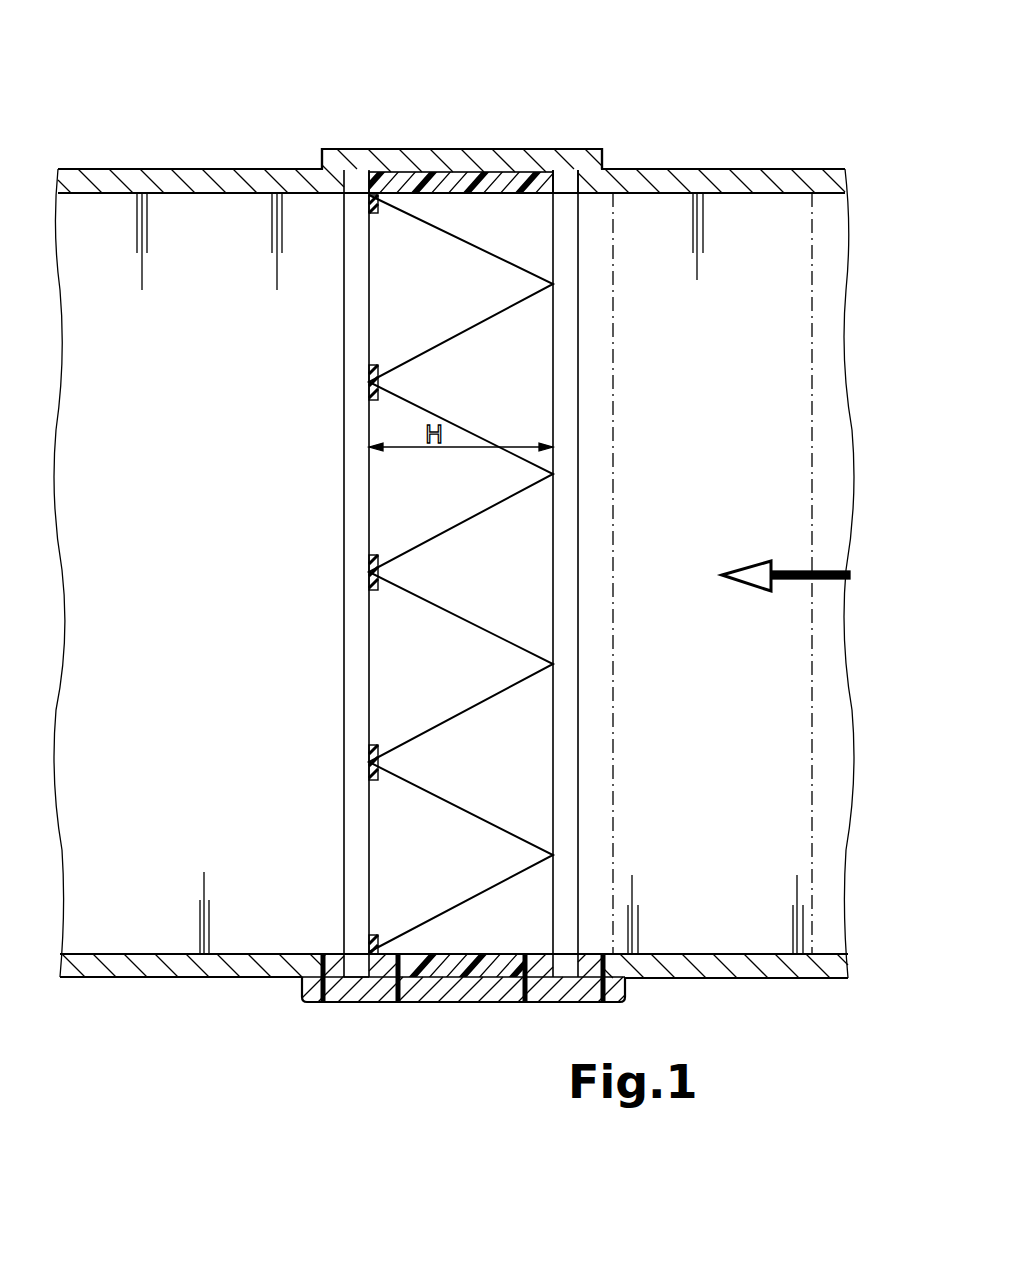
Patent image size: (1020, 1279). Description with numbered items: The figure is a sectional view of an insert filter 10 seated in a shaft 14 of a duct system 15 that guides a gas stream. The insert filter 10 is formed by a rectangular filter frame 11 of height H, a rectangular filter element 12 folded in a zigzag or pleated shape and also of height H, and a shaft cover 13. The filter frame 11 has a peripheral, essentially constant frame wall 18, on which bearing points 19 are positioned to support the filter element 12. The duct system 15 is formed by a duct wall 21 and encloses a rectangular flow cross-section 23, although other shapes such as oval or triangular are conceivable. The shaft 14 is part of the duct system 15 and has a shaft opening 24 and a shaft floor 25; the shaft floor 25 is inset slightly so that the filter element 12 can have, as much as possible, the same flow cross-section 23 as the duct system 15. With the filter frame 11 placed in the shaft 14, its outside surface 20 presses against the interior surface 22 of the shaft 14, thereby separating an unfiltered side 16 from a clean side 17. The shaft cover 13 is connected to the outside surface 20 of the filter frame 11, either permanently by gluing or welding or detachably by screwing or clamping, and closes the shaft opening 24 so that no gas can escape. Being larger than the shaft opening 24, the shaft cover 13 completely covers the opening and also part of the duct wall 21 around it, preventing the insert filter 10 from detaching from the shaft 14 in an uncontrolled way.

The insert filter 10 is at (405, 1030).
The filter frame 11 is at (540, 963).
The filter element 12 is at (508, 830).
The shaft cover 13 is at (478, 1000).
The shaft 14 is at (358, 222).
The duct system 15 is at (656, 120).
The unfiltered side 16 is at (704, 898).
The clean side 17 is at (183, 915).
The frame wall 18 is at (514, 183).
The bearing points 19 is at (369, 383).
The outside surface 20 is at (505, 167).
The duct wall 21 is at (210, 172).
The interior surface 22 is at (557, 177).
The flow cross-section 23 is at (810, 238).
The shaft opening 24 is at (360, 967).
The shaft floor 25 is at (437, 160).